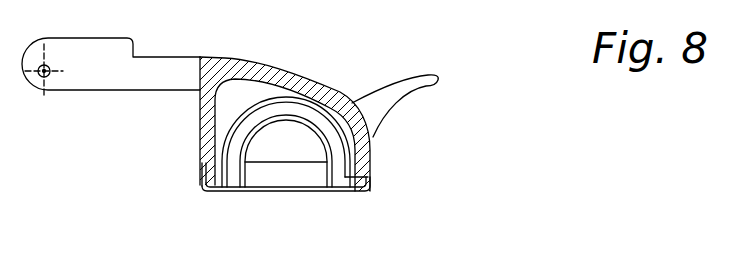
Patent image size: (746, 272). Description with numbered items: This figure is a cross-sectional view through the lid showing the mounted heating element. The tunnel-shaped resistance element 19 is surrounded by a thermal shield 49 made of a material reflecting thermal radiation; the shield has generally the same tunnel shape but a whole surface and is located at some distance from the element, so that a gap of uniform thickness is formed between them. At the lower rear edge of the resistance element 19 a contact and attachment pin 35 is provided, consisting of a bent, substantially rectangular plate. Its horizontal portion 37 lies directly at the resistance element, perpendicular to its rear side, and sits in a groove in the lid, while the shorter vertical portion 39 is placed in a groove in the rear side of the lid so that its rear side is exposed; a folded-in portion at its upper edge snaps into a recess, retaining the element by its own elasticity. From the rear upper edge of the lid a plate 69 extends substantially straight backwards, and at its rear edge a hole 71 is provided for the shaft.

The resistance element 19 is at (318, 126).
The contact and attachment pin 35 is at (195, 198).
The horizontal portion 37 is at (230, 188).
The vertical portion 39 is at (202, 167).
The thermal shield 49 is at (258, 103).
The plate 69 is at (121, 74).
The hole 71 is at (44, 80).